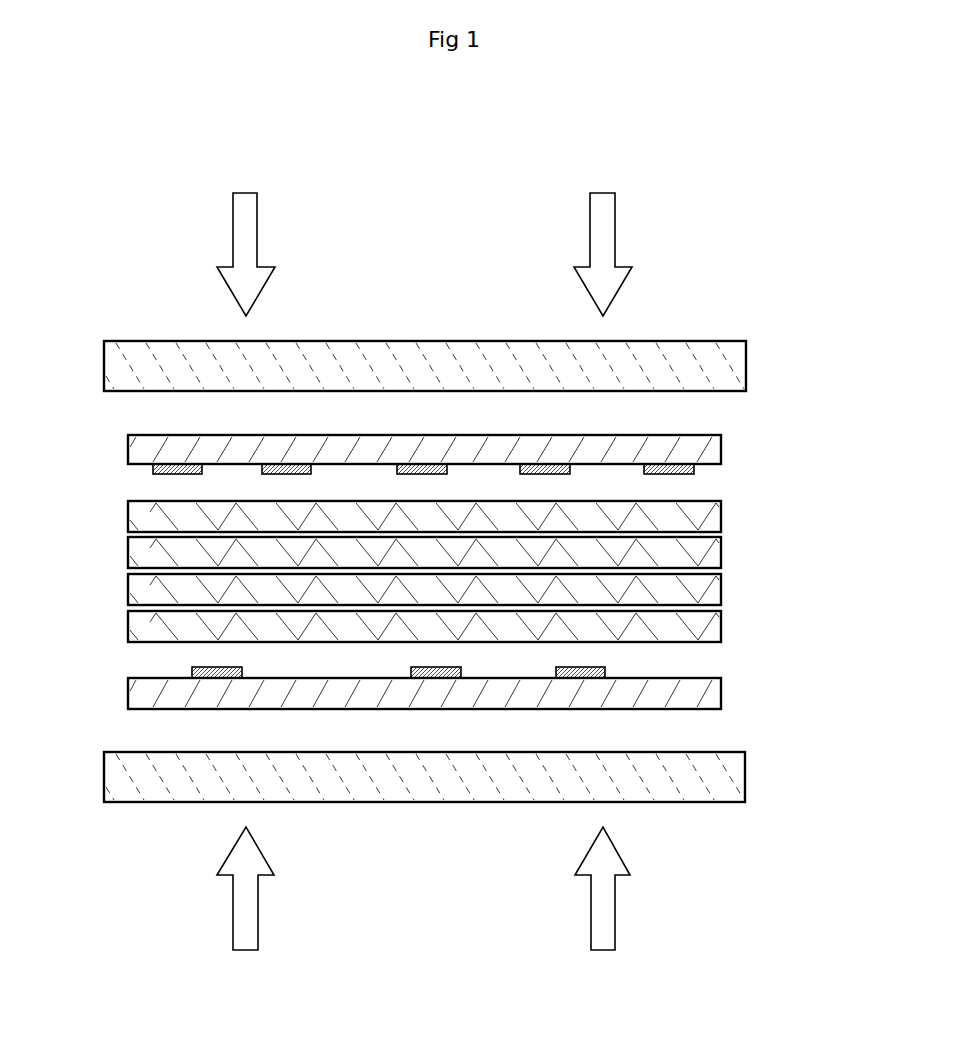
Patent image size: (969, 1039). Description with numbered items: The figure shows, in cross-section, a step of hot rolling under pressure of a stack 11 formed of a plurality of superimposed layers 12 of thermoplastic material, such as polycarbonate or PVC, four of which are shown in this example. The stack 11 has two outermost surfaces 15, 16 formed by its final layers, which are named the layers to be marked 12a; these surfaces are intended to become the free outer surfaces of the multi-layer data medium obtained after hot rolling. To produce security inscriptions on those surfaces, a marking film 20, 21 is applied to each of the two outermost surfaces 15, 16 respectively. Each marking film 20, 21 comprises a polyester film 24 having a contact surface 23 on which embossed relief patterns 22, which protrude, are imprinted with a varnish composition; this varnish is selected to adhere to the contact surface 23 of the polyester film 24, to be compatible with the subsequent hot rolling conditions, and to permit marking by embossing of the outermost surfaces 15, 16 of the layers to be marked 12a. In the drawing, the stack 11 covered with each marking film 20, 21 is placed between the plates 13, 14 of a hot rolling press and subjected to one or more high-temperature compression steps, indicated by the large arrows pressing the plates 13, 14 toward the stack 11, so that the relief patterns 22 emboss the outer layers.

The stack 11 is at (465, 571).
The superimposed layers 12 is at (148, 588).
The layers to be marked 12a is at (700, 510).
The plate 13 is at (681, 365).
The plate 14 is at (682, 775).
The outermost surface 15 is at (333, 501).
The outermost surface 16 is at (333, 642).
The marking film 20 is at (739, 432).
The marking film 21 is at (739, 672).
The embossed relief patterns 22 is at (292, 470).
The contact surface 23 is at (362, 457).
The polyester film 24 is at (148, 443).